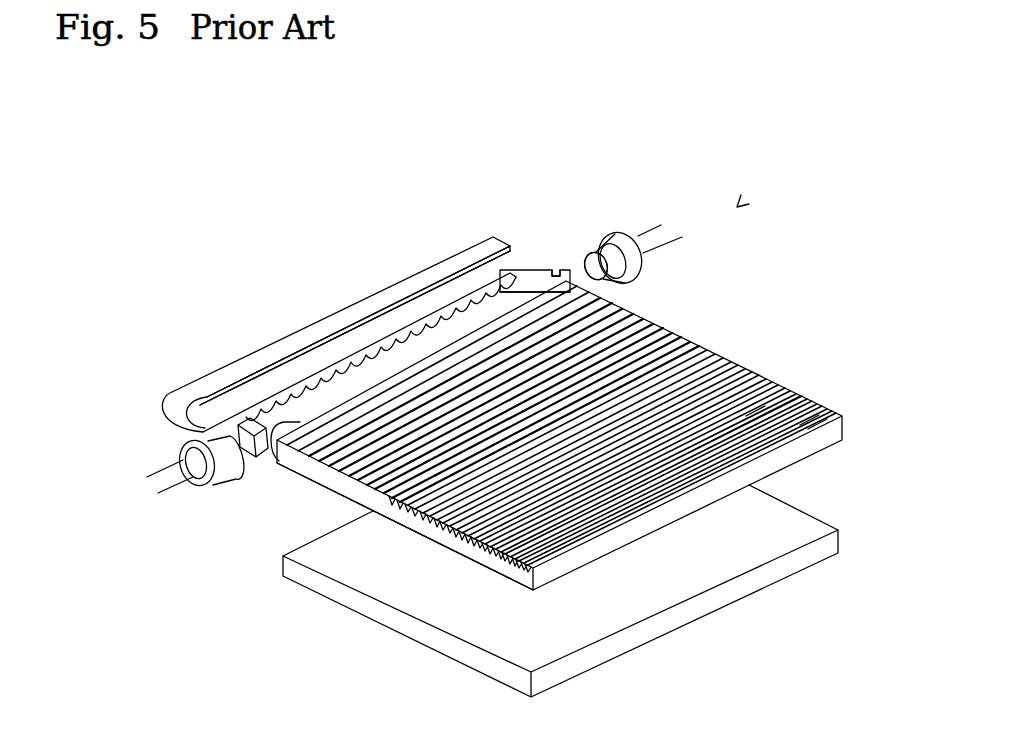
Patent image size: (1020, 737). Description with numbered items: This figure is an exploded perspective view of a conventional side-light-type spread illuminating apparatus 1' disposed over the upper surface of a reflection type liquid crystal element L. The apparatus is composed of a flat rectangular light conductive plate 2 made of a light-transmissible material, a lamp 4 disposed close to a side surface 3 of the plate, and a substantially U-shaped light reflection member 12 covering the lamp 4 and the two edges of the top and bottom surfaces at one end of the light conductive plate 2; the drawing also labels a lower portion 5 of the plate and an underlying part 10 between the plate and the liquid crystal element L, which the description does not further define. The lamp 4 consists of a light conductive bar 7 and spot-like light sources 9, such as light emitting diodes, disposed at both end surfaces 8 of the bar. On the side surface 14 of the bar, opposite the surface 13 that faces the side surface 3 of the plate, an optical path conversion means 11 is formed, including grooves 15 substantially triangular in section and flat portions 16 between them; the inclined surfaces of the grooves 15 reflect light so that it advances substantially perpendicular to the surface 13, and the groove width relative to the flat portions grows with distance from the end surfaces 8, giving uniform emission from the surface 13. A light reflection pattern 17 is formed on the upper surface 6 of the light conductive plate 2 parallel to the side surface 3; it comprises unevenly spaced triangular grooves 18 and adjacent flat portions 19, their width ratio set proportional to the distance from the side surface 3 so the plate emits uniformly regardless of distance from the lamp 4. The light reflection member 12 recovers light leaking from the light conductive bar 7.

The spread illuminating apparatus 1' is at (775, 155).
The light conductive plate 2 is at (448, 534).
The side surface 3 is at (270, 456).
The lamp 4 is at (612, 154).
The light emitting face side 5 is at (383, 522).
The upper surface 6 is at (668, 354).
The light conductive bar 7 is at (560, 272).
The end surfaces 8 is at (548, 270).
The light sources 9 is at (612, 233).
The reflection sheet 10 is at (683, 503).
The optical path conversion means 11 is at (352, 352).
The light reflection member 12 is at (223, 374).
The surface 13 is at (322, 410).
The side surface 14 is at (455, 312).
The grooves 15 is at (355, 328).
The flat portions 16 is at (358, 321).
The light reflection pattern 17 is at (858, 273).
The grooves 18 is at (752, 396).
The flat portions 19 is at (813, 403).
The reflection type liquid crystal element L is at (694, 631).